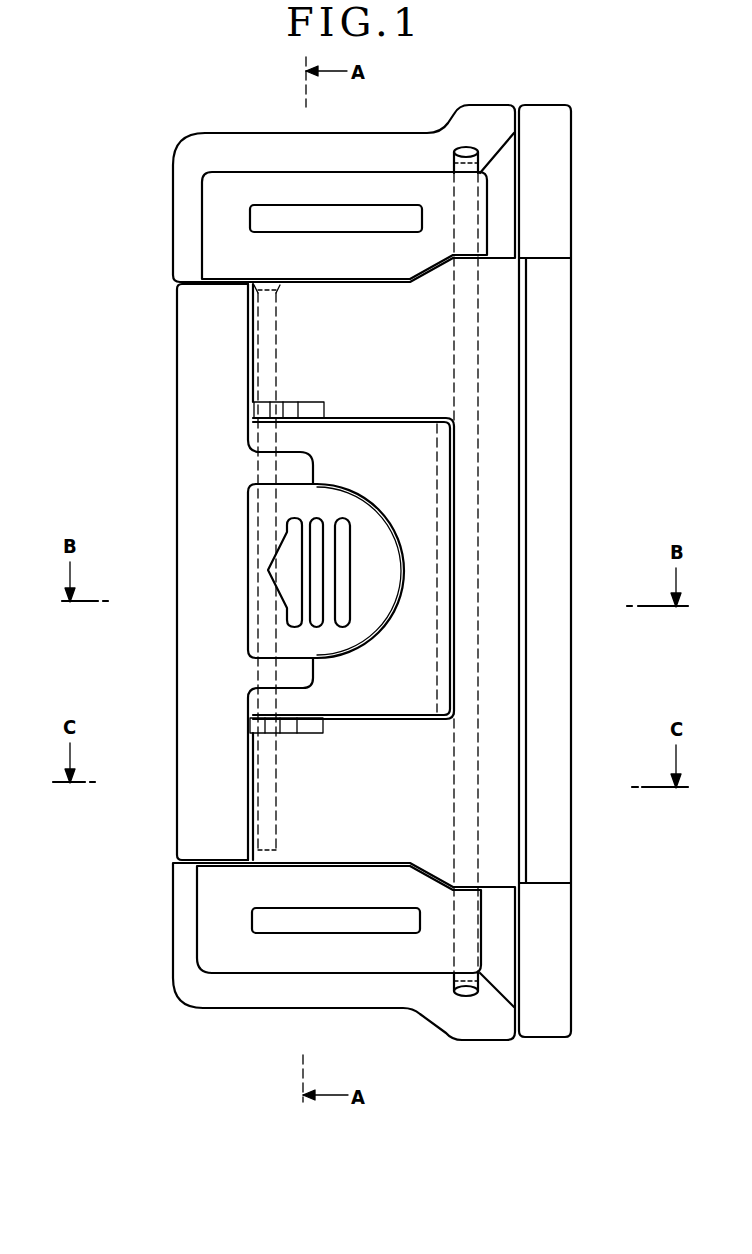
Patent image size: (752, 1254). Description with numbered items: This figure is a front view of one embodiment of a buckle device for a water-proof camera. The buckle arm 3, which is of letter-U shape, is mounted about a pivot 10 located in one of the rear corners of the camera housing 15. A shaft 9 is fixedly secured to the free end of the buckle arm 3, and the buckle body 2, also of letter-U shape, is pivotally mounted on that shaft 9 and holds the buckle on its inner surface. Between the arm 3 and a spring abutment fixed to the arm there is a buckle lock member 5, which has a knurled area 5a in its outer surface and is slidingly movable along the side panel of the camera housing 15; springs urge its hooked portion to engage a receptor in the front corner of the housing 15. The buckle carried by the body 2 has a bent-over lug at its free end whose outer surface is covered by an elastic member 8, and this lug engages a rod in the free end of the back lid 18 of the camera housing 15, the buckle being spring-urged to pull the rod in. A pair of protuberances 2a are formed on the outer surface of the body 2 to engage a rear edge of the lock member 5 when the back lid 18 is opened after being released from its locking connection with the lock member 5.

The buckle body 2 is at (290, 805).
The protuberances 2a is at (282, 402).
The buckle arm 3 is at (285, 702).
The buckle lock member 5 is at (192, 547).
The knurled area 5a is at (293, 528).
The elastic member 8 is at (572, 852).
The shaft 9 is at (262, 832).
The pivot 10 is at (470, 953).
The camera housing 15 is at (330, 1007).
The back lid 18 is at (568, 1006).